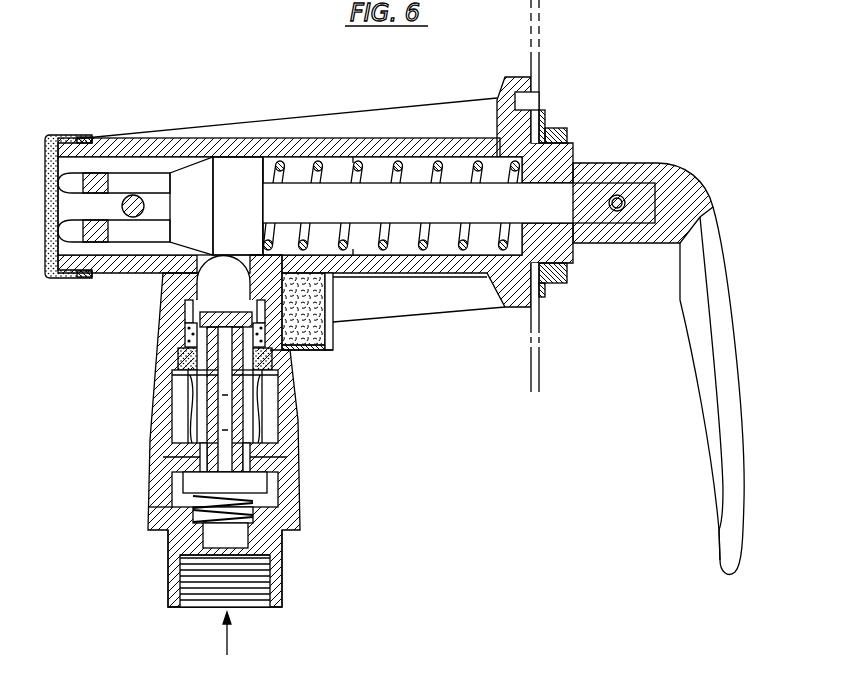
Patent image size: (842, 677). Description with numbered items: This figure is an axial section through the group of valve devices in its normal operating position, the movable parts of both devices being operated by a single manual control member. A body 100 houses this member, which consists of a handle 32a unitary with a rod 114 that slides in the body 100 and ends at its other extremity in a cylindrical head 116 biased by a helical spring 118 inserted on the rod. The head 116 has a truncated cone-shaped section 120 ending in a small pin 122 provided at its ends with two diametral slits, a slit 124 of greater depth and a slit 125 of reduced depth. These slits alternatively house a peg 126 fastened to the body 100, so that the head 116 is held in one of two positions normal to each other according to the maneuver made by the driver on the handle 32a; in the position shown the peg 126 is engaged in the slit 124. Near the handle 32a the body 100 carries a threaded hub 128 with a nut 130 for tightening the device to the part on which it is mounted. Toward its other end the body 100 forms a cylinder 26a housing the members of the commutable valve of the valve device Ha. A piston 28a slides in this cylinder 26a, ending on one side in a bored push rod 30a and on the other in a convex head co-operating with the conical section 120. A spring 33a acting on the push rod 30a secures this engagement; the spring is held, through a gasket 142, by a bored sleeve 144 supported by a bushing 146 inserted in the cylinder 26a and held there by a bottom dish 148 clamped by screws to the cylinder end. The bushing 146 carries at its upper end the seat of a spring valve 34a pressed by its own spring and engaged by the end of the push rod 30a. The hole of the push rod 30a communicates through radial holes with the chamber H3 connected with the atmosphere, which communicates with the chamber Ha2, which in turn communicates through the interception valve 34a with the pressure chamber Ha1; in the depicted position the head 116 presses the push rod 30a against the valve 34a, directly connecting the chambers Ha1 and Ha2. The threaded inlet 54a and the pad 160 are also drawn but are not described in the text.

The body 100 is at (392, 138).
The rod 114 is at (560, 200).
The cylindrical head 116 is at (240, 165).
The helical spring 118 is at (453, 250).
The truncated cone-shaped section 120 is at (190, 173).
The small pin 122 is at (155, 182).
The diametral slit 124 is at (113, 215).
The diametral slit 125 is at (70, 232).
The peg 126 is at (128, 197).
The threaded hub 128 is at (575, 150).
The nut 130 is at (555, 127).
The piston 28a is at (228, 268).
The chamber H3 is at (188, 308).
The spring 33a is at (185, 335).
The gasket 142 is at (178, 358).
The valve device Ha is at (152, 402).
The chamber Ha2 is at (178, 418).
The pressure chamber Ha1 is at (160, 490).
The bottom dish 148 is at (160, 530).
The threaded inlet 54a is at (257, 587).
The foam pad 160 is at (308, 320).
The bored sleeve 144 is at (280, 393).
The cylinder 26a is at (290, 420).
The bored push rod 30a is at (287, 452).
The spring valve 34a is at (257, 481).
The bushing 146 is at (287, 498).
The handle 32a is at (706, 370).